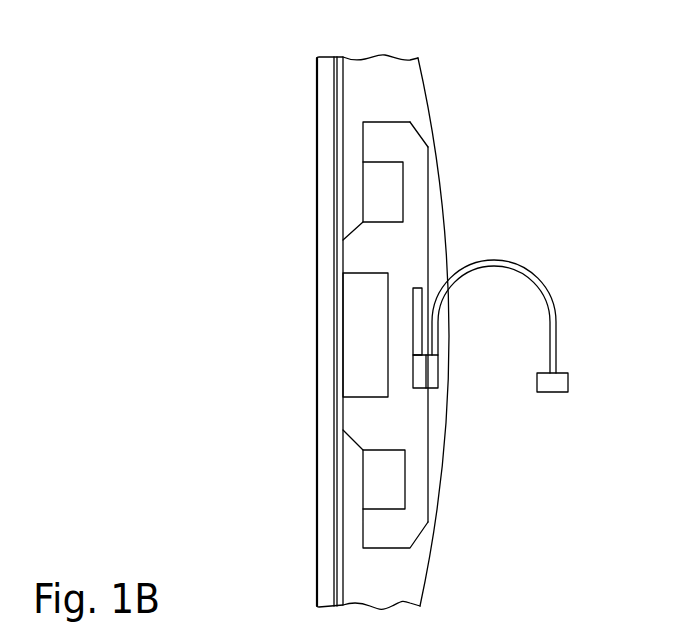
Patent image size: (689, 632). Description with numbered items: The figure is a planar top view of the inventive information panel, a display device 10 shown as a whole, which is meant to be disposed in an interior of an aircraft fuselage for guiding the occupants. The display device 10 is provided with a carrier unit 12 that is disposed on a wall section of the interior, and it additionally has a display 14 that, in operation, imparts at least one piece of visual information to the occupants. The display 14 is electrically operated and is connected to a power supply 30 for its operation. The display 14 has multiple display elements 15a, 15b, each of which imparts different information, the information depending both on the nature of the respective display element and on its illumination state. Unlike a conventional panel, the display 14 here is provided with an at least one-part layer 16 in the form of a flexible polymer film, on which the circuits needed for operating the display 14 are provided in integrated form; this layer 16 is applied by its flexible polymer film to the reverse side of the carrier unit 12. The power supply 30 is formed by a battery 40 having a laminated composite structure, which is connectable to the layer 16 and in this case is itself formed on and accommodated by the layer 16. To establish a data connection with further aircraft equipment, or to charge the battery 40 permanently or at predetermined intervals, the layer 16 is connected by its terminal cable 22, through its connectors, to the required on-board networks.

The display device 10 is at (551, 91).
The carrier unit 12 is at (412, 90).
The display 14 is at (503, 221).
The display element 15a is at (358, 348).
The display element 15b is at (388, 190).
The layer 16 is at (418, 478).
The terminal cable 22 is at (557, 340).
The power supply 30 is at (470, 380).
The battery 40 is at (418, 323).